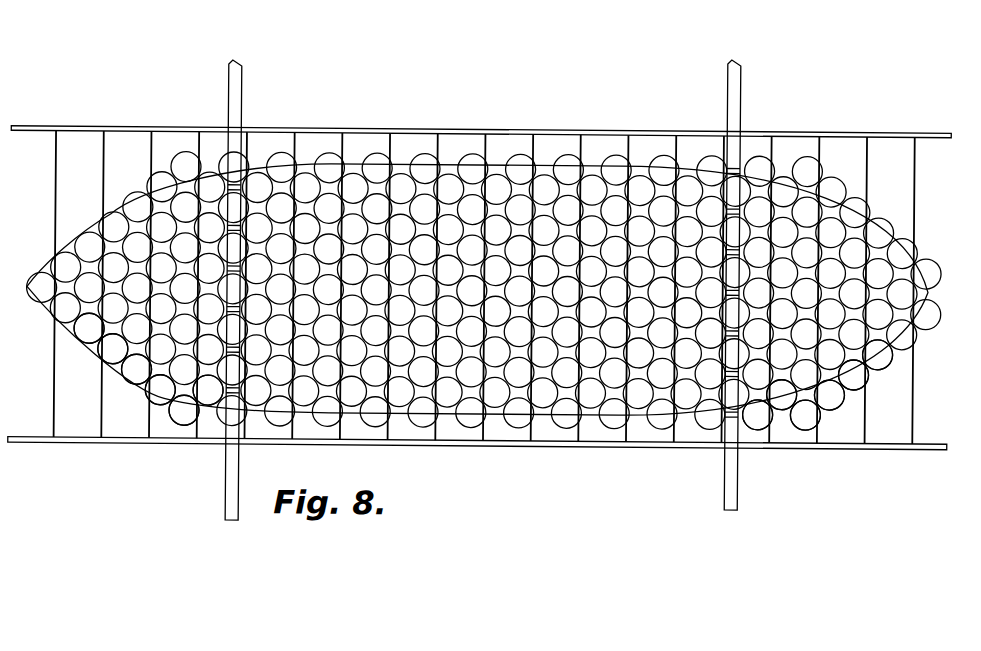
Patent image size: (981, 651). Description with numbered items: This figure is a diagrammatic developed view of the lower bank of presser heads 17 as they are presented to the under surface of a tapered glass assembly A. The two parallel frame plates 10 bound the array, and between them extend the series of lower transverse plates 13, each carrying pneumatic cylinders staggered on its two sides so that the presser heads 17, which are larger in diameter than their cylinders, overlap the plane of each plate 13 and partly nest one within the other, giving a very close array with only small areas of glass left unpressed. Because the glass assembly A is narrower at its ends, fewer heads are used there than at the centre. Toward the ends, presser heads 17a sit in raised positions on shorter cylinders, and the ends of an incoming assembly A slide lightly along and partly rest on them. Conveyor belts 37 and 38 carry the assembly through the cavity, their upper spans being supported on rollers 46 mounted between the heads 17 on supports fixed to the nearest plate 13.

The plates 10 is at (878, 134).
The lower plates 13 is at (628, 150).
The presser heads 17 is at (85, 253).
The presser heads 17a is at (89, 332).
The conveyor belt 37 is at (728, 473).
The conveyor belt 38 is at (230, 463).
The rollers 46 is at (236, 186).
The glass assembly A is at (493, 166).